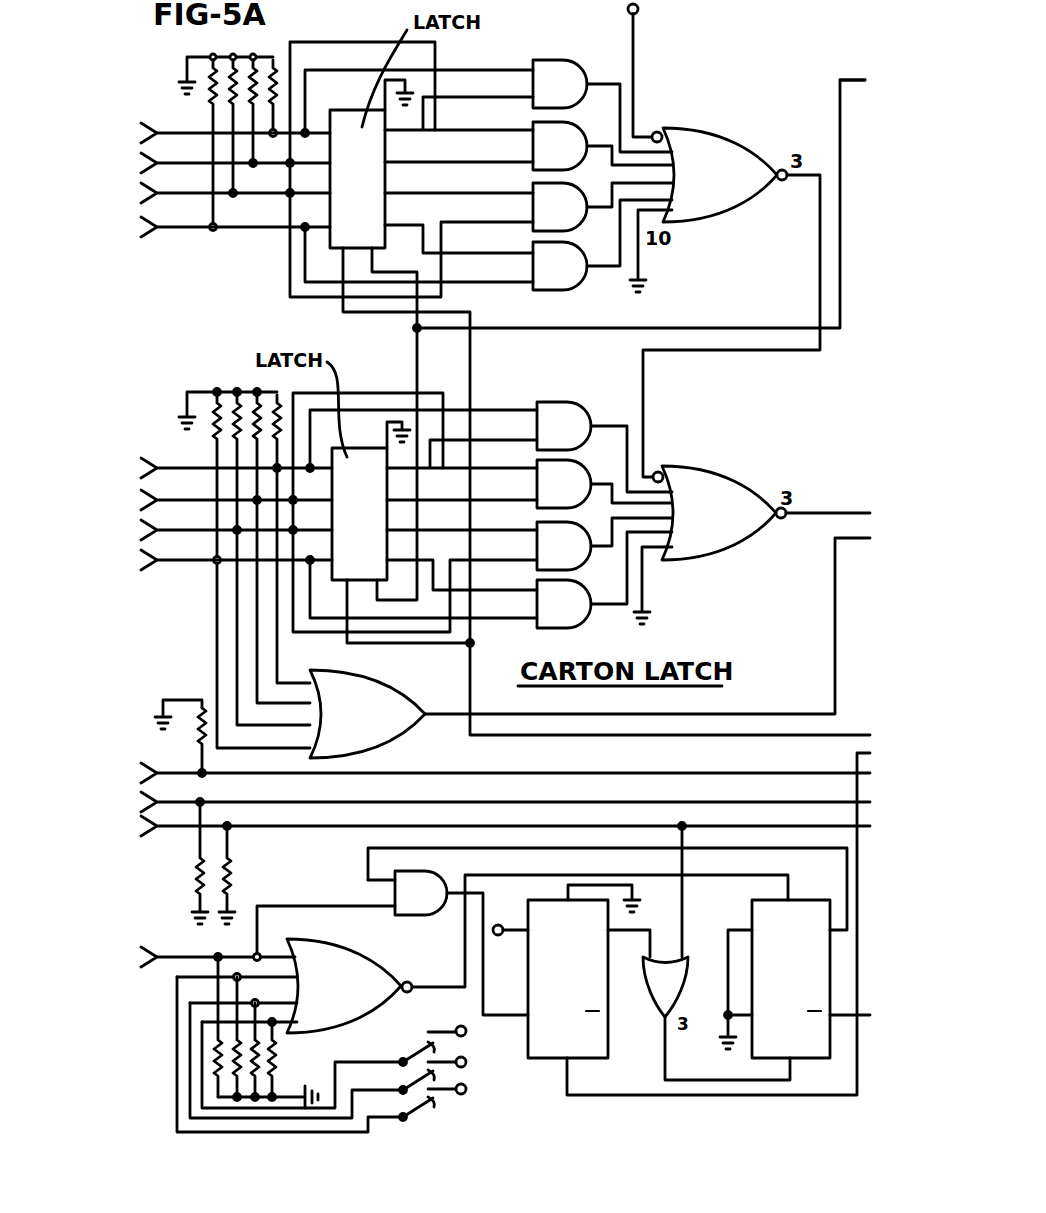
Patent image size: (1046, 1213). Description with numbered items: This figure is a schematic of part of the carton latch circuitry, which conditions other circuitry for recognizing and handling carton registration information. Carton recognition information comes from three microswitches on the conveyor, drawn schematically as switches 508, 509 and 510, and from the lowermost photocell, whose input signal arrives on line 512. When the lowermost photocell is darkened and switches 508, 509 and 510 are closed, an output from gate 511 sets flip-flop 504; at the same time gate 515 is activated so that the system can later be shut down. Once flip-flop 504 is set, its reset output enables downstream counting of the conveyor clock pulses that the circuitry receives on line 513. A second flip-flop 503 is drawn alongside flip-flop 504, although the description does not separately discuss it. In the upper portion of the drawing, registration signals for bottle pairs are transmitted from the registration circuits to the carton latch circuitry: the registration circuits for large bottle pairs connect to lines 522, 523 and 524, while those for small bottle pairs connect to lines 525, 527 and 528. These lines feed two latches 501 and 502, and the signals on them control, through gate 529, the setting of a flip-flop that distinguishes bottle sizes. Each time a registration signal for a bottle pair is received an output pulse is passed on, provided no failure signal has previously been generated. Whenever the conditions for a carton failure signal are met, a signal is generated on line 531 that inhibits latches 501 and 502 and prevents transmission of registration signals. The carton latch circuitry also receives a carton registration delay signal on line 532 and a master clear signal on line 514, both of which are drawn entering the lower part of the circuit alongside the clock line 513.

The latch 501 is at (377, 197).
The latch 502 is at (378, 530).
The first flip-flop 503 is at (533, 1041).
The flip-flop 504 is at (771, 1050).
The switch 508 is at (410, 1056).
The switch 509 is at (410, 1085).
The switch 510 is at (424, 1104).
The gate 511 is at (357, 962).
The line 512 is at (188, 955).
The line 513 is at (455, 800).
The line 514 is at (362, 830).
The gate 515 is at (417, 901).
The line 522 is at (188, 128).
The line 523 is at (193, 166).
The line 524 is at (182, 229).
The line 525 is at (188, 465).
The line 527 is at (183, 534).
The line 528 is at (202, 564).
The gate 529 is at (393, 702).
The line 531 is at (846, 79).
The line 532 is at (488, 771).